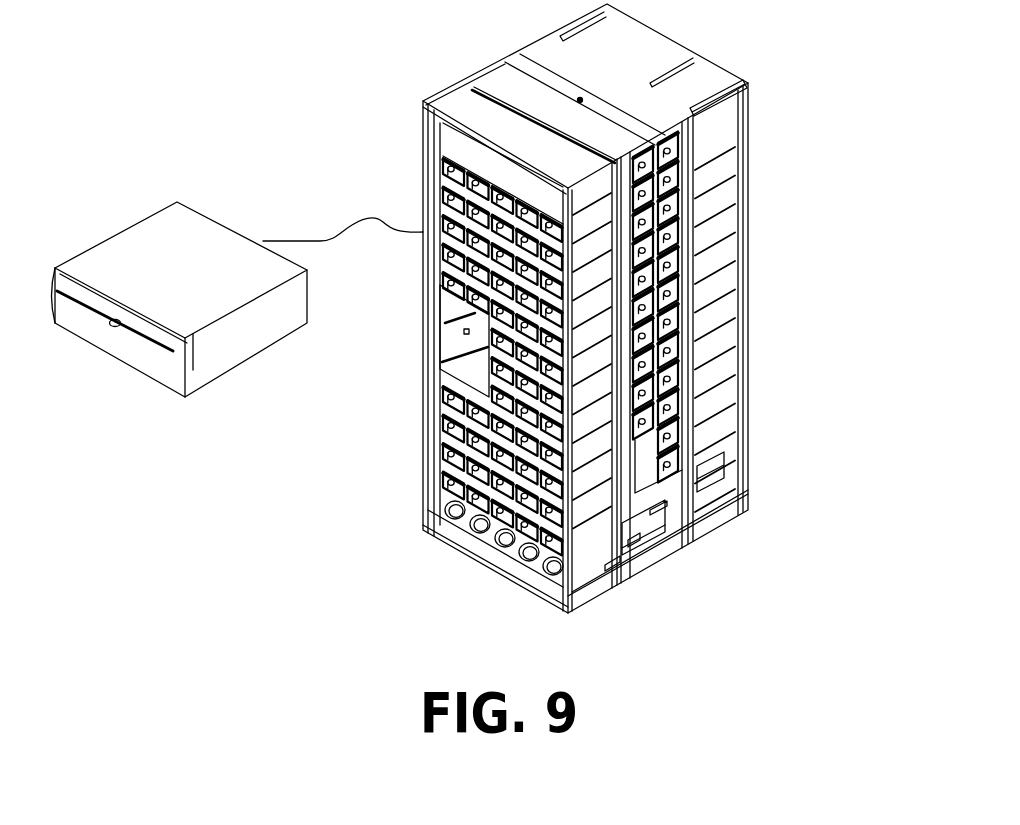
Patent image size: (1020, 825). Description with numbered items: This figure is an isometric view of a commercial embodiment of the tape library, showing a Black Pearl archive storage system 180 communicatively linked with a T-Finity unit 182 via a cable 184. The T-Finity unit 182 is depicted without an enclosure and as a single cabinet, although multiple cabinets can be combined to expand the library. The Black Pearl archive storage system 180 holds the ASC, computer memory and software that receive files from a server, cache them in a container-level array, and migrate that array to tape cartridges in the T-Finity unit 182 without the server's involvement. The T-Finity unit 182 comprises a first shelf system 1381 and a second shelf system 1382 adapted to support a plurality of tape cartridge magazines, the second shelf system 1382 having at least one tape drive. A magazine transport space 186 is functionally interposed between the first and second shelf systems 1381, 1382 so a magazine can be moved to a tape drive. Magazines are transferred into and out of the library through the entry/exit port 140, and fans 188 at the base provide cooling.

The Black Pearl archive storage system 180 is at (147, 218).
The T-Finity unit 182 is at (443, 47).
The cable 184 is at (339, 231).
The entry/exit port 140 is at (457, 351).
The first shelf system 1381 is at (414, 421).
The second shelf system 1382 is at (767, 298).
The magazine transport space 186 is at (666, 512).
The fans 188 is at (461, 540).